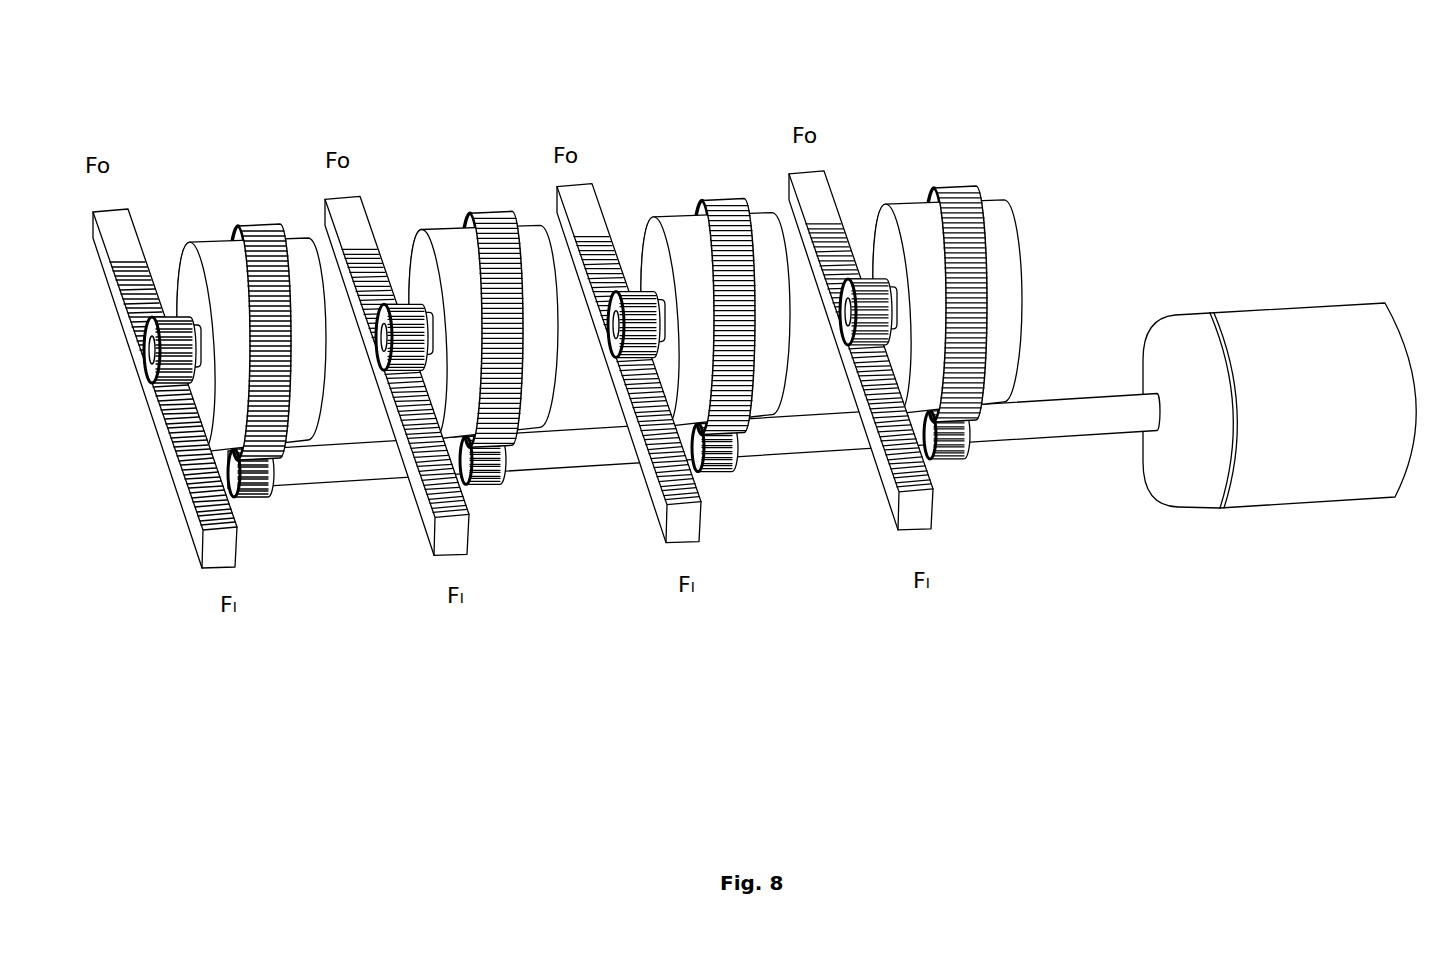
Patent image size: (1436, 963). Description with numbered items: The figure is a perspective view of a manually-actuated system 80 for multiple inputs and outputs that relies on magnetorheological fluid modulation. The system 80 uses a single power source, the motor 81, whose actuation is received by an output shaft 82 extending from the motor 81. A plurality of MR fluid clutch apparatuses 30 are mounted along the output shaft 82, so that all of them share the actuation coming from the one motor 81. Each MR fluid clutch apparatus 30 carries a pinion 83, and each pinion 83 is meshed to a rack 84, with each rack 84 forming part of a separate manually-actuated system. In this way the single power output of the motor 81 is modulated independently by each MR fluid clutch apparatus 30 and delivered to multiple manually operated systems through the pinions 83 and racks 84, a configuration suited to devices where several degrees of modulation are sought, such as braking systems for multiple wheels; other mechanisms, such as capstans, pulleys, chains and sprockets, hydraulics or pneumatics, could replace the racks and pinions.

The MR fluid clutch apparatus 30 is at (290, 240).
The manually-actuated system 80 is at (1090, 157).
The motor 81 is at (1270, 328).
The output shaft 82 is at (538, 453).
The pinion 83 is at (174, 322).
The rack 84 is at (194, 550).